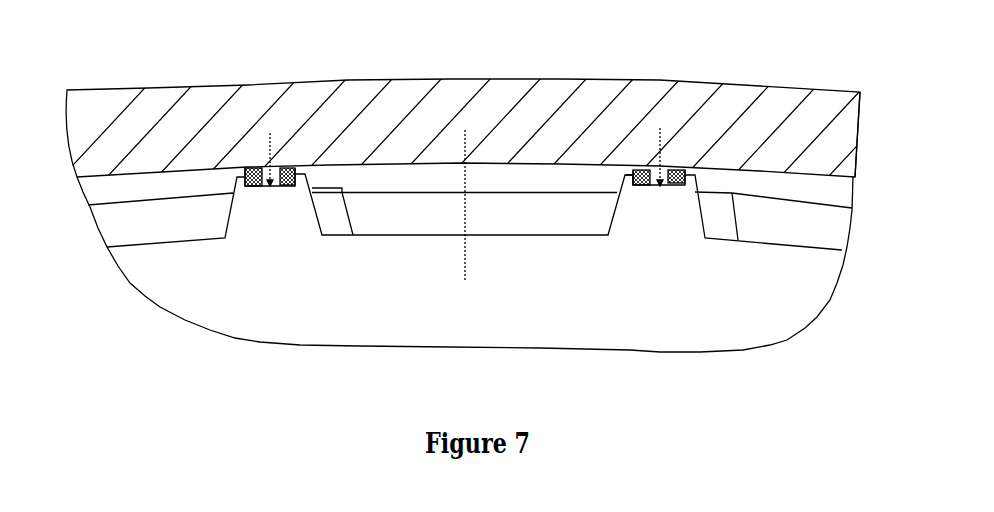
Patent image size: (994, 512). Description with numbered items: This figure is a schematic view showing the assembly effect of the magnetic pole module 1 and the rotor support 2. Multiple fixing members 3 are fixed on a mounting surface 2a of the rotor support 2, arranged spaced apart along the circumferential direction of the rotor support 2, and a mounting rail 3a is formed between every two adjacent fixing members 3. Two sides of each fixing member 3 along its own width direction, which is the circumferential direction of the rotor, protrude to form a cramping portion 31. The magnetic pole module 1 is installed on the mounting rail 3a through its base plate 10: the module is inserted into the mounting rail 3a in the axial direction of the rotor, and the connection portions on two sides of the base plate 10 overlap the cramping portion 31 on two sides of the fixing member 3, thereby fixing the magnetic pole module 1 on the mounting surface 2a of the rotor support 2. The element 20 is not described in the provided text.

The magnetic pole module 1 is at (201, 245).
The rotor support 2 is at (514, 78).
The mounting surface 2a is at (845, 183).
The fixing member 3 is at (266, 186).
The mounting rail 3a is at (624, 188).
The base plate 10 is at (408, 177).
The mesa 20 is at (533, 227).
The cramping portion 31 is at (243, 168).